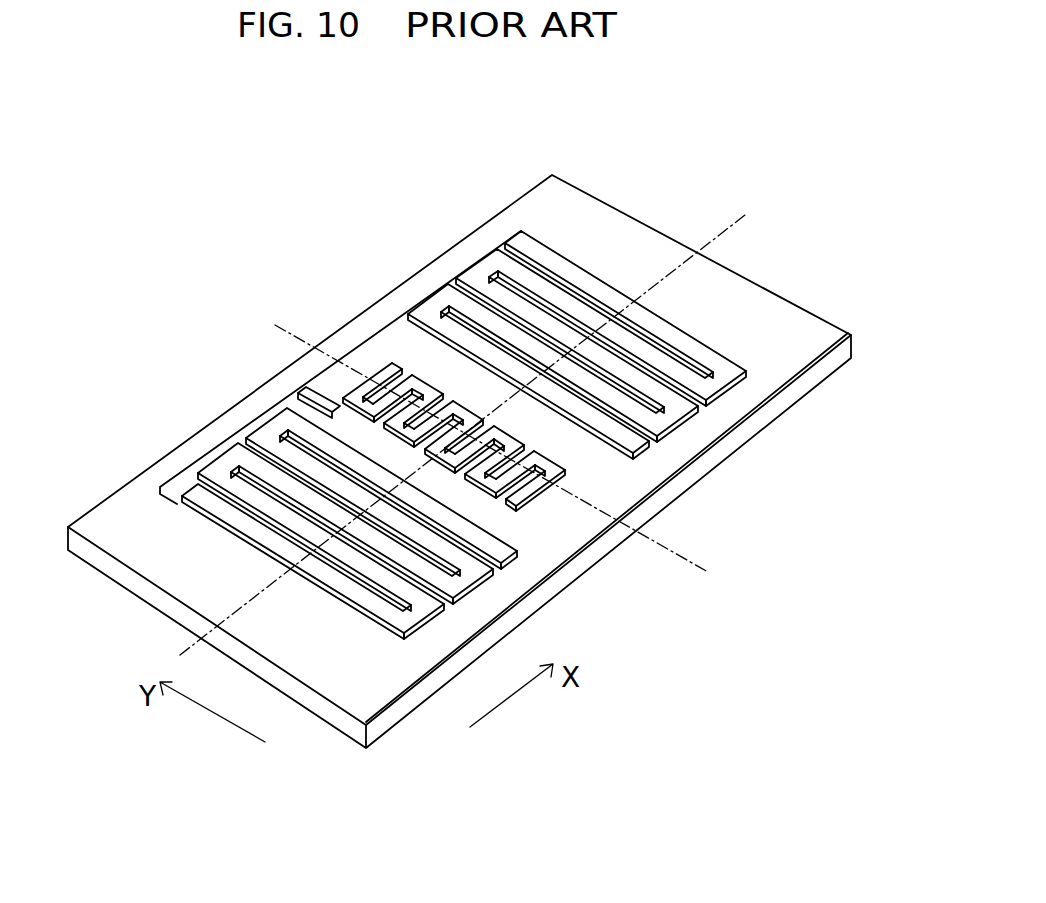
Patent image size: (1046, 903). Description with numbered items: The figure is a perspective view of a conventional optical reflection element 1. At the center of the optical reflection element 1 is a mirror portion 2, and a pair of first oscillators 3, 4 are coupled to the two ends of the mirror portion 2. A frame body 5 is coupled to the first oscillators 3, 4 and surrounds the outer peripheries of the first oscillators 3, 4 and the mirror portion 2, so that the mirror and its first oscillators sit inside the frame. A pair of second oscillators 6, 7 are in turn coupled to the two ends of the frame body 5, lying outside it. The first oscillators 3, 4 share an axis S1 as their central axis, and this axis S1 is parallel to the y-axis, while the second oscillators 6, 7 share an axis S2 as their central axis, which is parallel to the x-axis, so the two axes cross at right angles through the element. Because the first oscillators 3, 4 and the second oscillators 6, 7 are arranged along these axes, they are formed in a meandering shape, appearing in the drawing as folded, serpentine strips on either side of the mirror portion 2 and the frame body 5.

The optical reflection element 1 is at (519, 182).
The mirror portion 2 is at (472, 387).
The first oscillator 3 is at (383, 390).
The first oscillator 4 is at (567, 466).
The frame body 5 is at (313, 405).
The second oscillator 6 is at (462, 278).
The second oscillator 7 is at (272, 425).
The axis S1 is at (513, 458).
The axis S2 is at (470, 420).